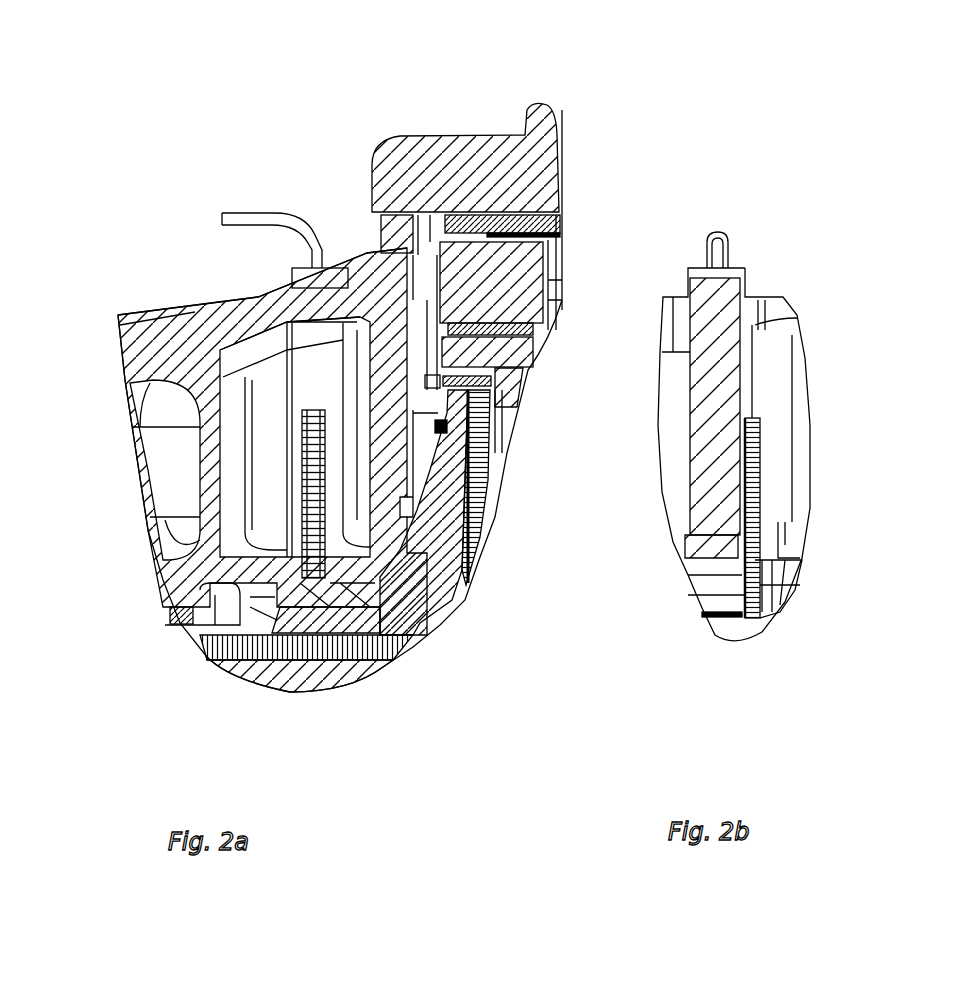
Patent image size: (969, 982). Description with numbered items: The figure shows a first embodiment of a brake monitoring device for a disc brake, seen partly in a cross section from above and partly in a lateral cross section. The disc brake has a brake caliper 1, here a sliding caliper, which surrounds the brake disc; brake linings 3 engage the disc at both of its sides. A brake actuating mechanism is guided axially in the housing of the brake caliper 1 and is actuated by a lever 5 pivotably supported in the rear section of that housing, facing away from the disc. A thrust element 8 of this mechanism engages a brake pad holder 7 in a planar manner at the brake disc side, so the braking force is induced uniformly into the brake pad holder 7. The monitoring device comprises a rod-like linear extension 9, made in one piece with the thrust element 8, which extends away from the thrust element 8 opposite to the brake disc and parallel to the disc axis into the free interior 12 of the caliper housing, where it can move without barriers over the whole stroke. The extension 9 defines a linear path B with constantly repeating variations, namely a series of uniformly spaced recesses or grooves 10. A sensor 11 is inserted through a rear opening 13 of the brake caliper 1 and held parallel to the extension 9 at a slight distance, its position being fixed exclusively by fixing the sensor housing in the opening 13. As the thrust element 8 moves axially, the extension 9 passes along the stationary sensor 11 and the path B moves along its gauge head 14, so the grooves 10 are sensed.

In FIG. 2A, the brake caliper 1 is at (466, 160).
In FIG. 2A, the brake linings 3 is at (335, 668).
In FIG. 2A, the lever 5 is at (568, 180).
In FIG. 2A, the brake pad holder 7 is at (273, 650).
In FIG. 2A, the thrust element 8 is at (430, 617).
In FIG. 2B, the thrust element 8 is at (732, 622).
In FIG. 2A, the rod-like linear extension 9 is at (313, 605).
In FIG. 2B, the rod-like linear extension 9 is at (745, 595).
In FIG. 2A, the recesses or grooves 10 is at (183, 617).
In FIG. 2B, the recesses or grooves 10 is at (770, 448).
In FIG. 2A, the sensor 11 is at (320, 377).
In FIG. 2B, the sensor 11 is at (710, 378).
In FIG. 2A, the free interior 12 is at (275, 493).
In FIG. 2A, the rear opening 13 is at (295, 285).
In FIG. 2B, the gauge head 14 is at (742, 535).
In FIG. 2A, the linear path B is at (312, 597).
In FIG. 2B, the linear path B is at (760, 522).